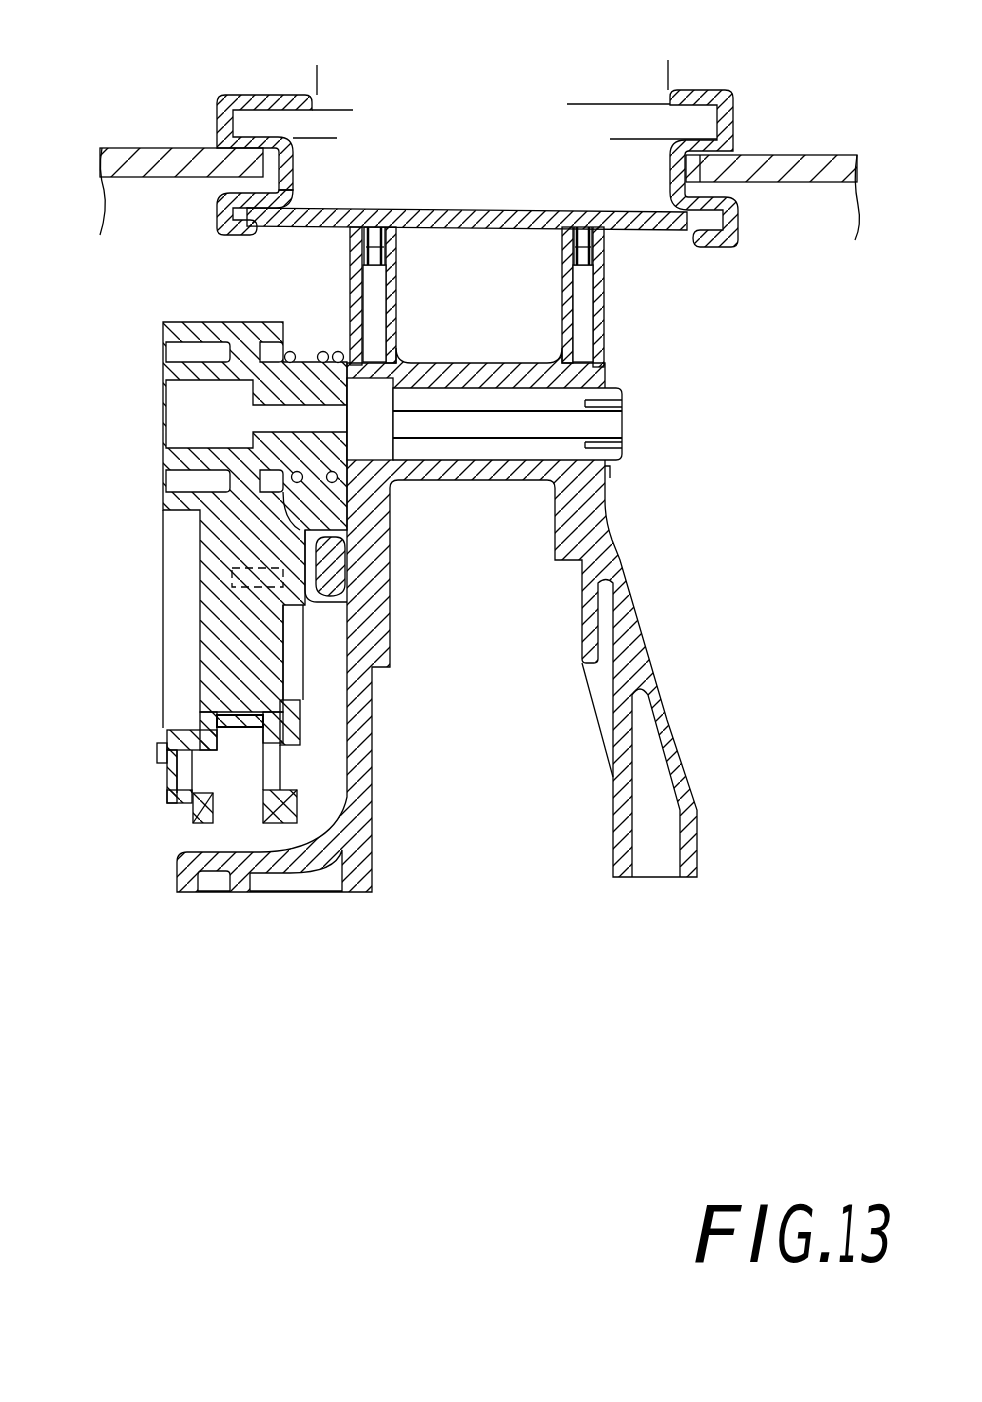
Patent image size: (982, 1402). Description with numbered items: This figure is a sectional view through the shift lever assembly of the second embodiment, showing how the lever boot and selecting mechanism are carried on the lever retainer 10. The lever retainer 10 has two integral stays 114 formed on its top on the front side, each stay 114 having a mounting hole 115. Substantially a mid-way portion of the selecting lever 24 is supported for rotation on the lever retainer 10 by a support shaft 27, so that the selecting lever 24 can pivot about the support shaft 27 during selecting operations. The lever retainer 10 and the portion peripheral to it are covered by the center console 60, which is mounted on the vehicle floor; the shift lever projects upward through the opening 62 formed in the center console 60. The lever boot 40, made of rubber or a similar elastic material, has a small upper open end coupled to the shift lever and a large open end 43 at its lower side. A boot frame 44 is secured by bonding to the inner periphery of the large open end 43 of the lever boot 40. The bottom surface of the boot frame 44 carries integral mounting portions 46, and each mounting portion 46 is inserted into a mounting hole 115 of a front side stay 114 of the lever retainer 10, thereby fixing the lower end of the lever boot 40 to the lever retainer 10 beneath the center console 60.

The lever retainer 10 is at (643, 663).
The selecting lever 24 is at (227, 643).
The support shaft 27 is at (480, 425).
The lever boot 40 is at (721, 95).
The large open end 43 is at (266, 238).
The boot frame 44 is at (465, 208).
The mounting portion 46 is at (386, 248).
The center console 60 is at (793, 160).
The opening 62 is at (287, 160).
The stay 114 is at (394, 318).
The mounting hole 115 is at (375, 295).